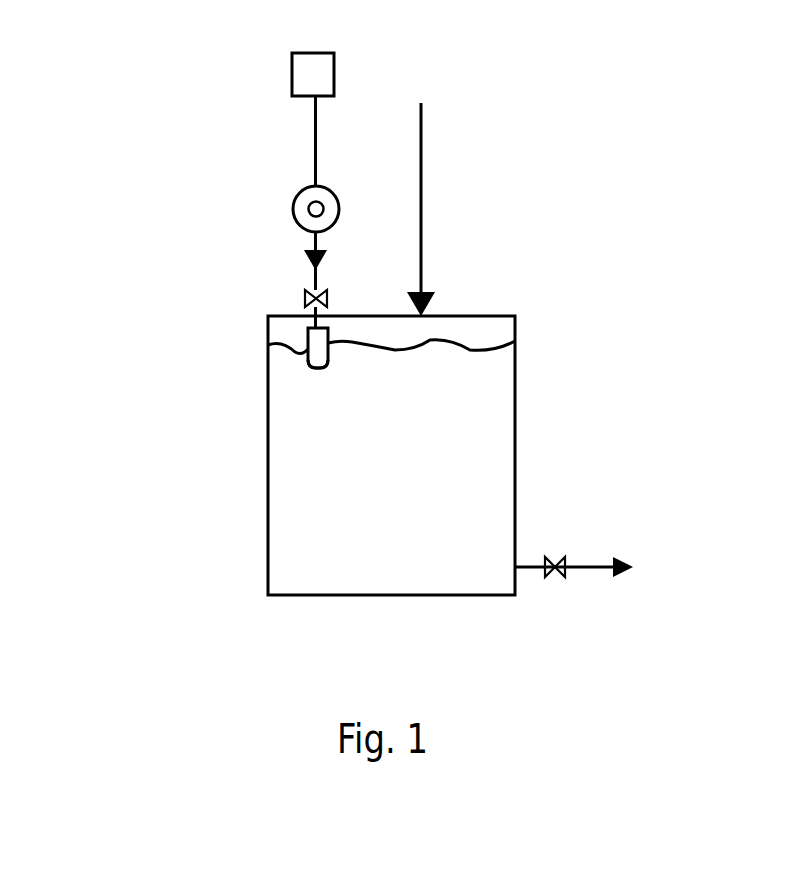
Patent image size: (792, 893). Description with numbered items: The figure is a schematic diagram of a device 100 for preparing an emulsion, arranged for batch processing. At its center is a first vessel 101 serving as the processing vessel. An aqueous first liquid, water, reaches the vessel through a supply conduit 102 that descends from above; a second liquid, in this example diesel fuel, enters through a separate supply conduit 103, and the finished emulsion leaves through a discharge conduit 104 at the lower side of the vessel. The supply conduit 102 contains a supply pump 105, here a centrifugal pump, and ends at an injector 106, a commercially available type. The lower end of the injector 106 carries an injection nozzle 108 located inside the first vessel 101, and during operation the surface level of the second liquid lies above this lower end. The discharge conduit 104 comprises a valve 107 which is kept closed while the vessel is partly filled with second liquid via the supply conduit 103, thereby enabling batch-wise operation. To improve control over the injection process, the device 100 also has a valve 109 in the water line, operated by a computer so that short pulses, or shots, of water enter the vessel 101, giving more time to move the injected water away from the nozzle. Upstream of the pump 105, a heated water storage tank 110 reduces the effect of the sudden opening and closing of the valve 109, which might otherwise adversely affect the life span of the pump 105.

The device 100 is at (208, 233).
The first vessel 101 is at (288, 483).
The supply conduit for aqueous first liquid 102 is at (315, 152).
The supply conduit for second liquid 103 is at (421, 170).
The discharge conduit for emulsion 104 is at (592, 563).
The supply pump 105 is at (301, 195).
The injector 106 is at (300, 343).
The valve 107 is at (555, 555).
The injection nozzle 108 is at (310, 366).
The valve 109 is at (305, 293).
The heated water storage tank 110 is at (308, 63).